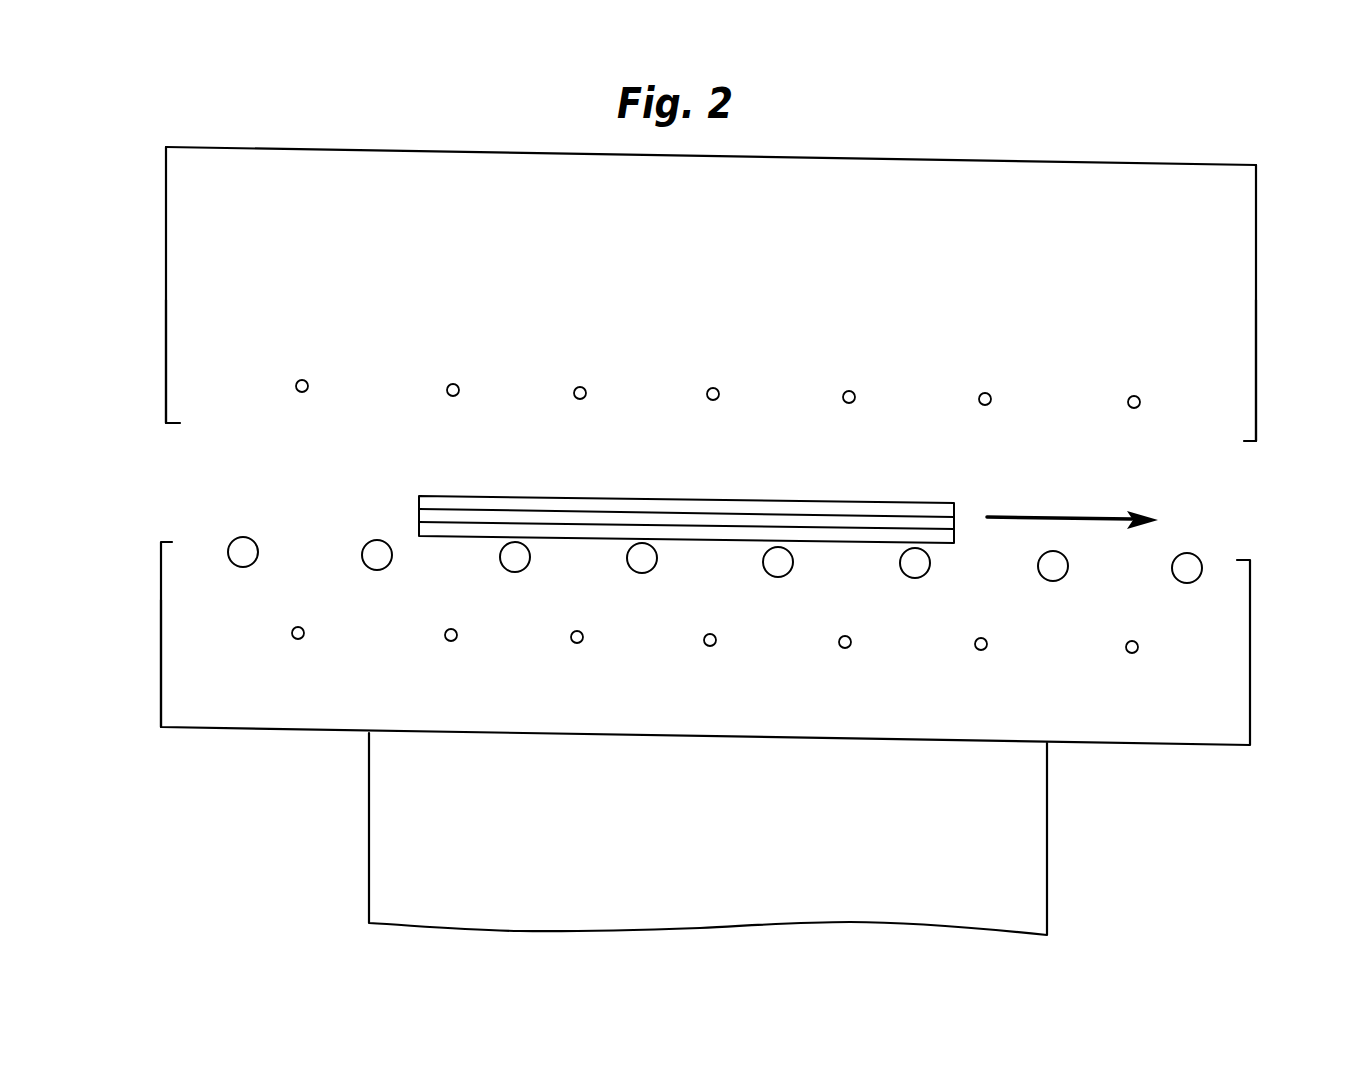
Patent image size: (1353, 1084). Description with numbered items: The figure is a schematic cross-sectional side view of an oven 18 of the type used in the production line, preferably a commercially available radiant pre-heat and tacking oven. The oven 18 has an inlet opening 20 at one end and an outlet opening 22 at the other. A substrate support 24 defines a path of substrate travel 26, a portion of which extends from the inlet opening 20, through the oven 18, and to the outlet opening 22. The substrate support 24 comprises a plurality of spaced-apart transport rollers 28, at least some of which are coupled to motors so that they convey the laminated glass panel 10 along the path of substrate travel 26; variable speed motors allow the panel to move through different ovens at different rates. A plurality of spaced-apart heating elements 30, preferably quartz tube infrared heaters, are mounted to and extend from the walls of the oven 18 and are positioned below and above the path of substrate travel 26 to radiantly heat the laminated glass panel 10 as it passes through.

The laminated glass panel 10 is at (433, 537).
The oven 18 is at (1160, 128).
The inlet opening 20 is at (180, 449).
The outlet opening 22 is at (1252, 484).
The substrate support 24 is at (464, 562).
The path of substrate travel 26 is at (1052, 519).
The transport rollers 28 is at (784, 566).
The heating elements 30 is at (296, 389).